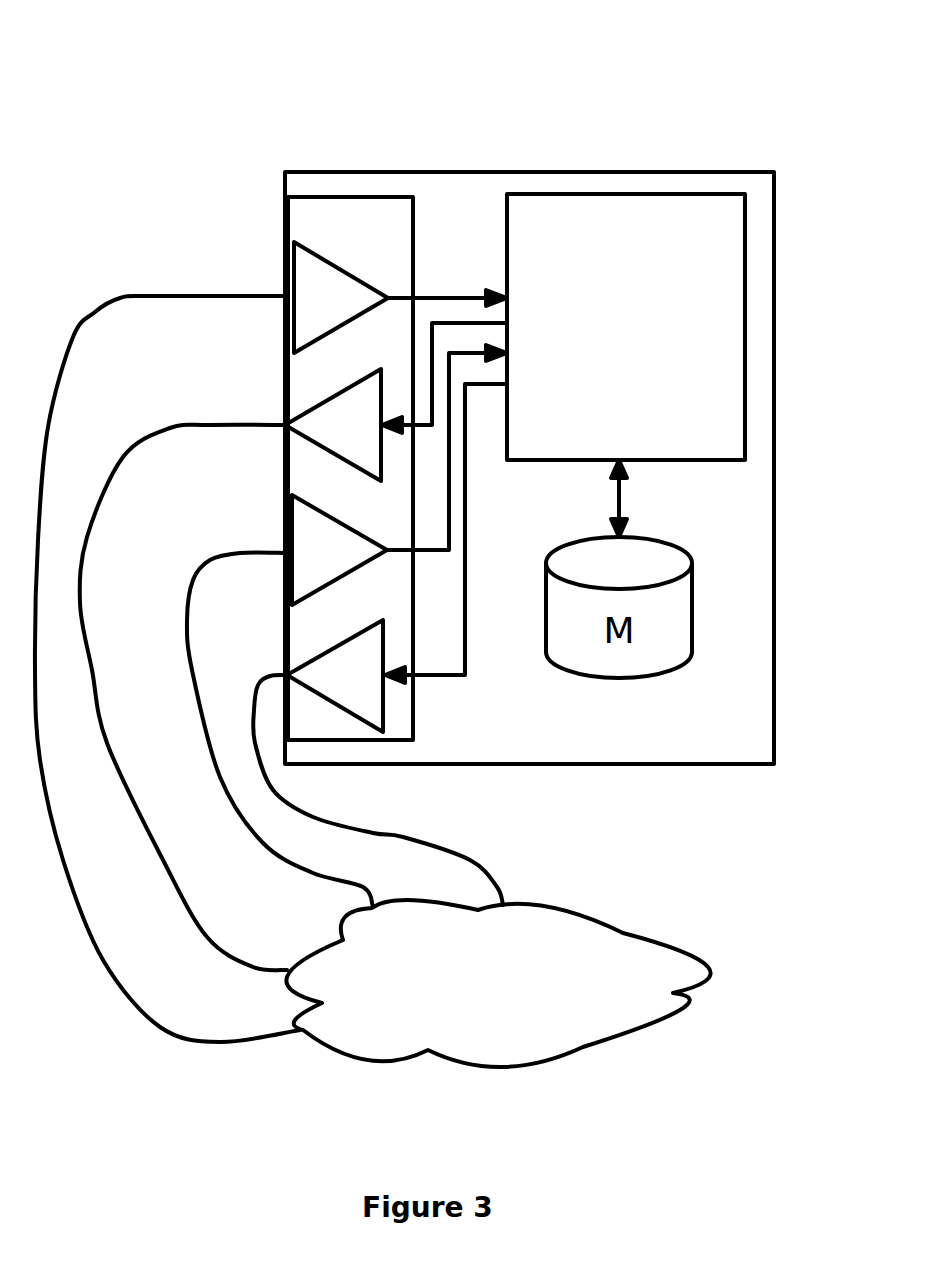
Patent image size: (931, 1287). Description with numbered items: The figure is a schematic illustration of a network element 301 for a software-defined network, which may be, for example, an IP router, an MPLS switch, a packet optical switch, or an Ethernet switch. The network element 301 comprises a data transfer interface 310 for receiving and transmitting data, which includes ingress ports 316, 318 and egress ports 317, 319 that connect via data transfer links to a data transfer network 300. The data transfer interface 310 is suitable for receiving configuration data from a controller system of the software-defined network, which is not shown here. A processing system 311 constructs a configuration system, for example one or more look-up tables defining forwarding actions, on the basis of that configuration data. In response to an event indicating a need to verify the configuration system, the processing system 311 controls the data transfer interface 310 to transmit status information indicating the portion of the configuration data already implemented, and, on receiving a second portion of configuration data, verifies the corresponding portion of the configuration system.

The network element 301 is at (690, 172).
The data transfer interface 310 is at (413, 728).
The processing system 311 is at (626, 327).
The ingress port 316 is at (271, 642).
The egress port 317 is at (293, 646).
The ingress port 318 is at (347, 626).
The egress port 319 is at (380, 644).
The data transfer network 300 is at (498, 983).